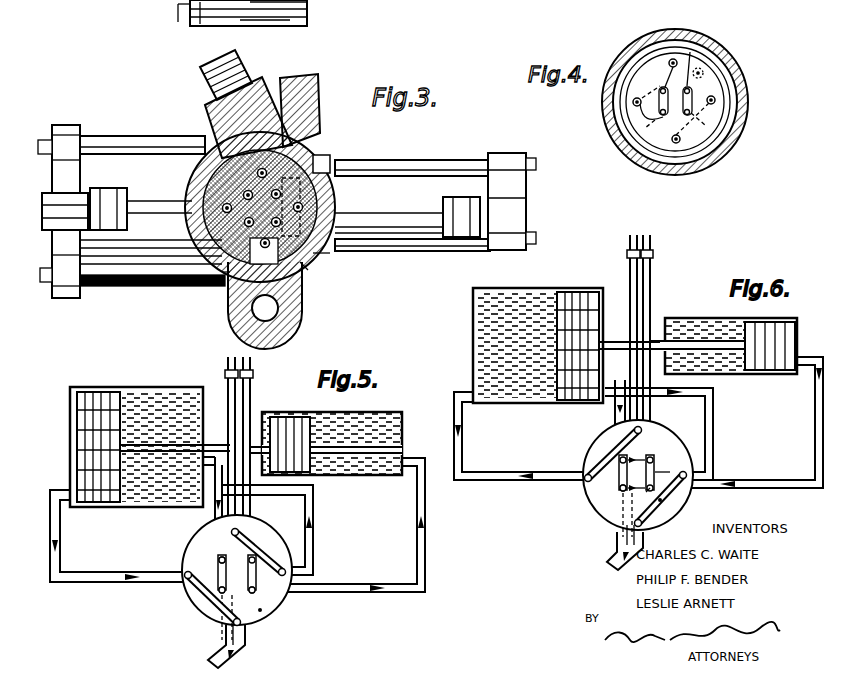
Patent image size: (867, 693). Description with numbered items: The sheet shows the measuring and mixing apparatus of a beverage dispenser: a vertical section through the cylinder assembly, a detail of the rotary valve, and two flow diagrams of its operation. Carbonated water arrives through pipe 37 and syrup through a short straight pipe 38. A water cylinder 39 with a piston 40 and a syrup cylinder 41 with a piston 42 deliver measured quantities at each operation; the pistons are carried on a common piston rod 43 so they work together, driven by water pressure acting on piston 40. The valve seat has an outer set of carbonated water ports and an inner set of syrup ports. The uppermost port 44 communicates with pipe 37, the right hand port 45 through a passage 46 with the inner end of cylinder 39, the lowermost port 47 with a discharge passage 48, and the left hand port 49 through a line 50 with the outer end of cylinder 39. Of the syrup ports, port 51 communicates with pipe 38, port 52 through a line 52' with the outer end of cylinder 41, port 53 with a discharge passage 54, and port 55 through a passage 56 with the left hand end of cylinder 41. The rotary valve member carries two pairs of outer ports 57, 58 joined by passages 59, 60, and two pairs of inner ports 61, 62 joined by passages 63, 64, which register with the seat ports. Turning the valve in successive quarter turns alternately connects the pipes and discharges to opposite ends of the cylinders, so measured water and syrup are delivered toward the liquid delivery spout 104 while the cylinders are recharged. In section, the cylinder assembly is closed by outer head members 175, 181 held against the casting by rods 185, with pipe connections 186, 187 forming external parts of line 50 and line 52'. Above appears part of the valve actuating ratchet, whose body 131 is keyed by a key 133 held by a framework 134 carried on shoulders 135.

In FIG. 3, the pipe 37 is at (210, 62).
In FIG. 6, the pipe 37 is at (627, 253).
In FIG. 5, the pipe 37 is at (225, 374).
In FIG. 3, the short straight pipe 38 is at (310, 78).
In FIG. 6, the short straight pipe 38 is at (654, 253).
In FIG. 5, the short straight pipe 38 is at (253, 378).
In FIG. 3, the water cylinder 39 is at (151, 214).
In FIG. 6, the water cylinder 39 is at (522, 289).
In FIG. 5, the water cylinder 39 is at (155, 387).
In FIG. 3, the piston 40 is at (407, 209).
In FIG. 6, the piston 40 is at (573, 292).
In FIG. 5, the piston 40 is at (110, 392).
In FIG. 6, the syrup cylinder 41 is at (684, 318).
In FIG. 5, the syrup cylinder 41 is at (372, 413).
In FIG. 6, the piston 42 is at (779, 321).
In FIG. 5, the piston 42 is at (306, 417).
In FIG. 6, the common piston rod 43 is at (616, 342).
In FIG. 5, the common piston rod 43 is at (213, 444).
In FIG. 3, the uppermost carbonated water port 44 is at (272, 165).
In FIG. 6, the uppermost carbonated water port 44 is at (610, 434).
In FIG. 5, the uppermost carbonated water port 44 is at (241, 531).
In FIG. 3, the right hand port 45 is at (305, 208).
In FIG. 6, the right hand port 45 is at (688, 466).
In FIG. 5, the right hand port 45 is at (287, 570).
In FIG. 6, the passage 46 is at (713, 402).
In FIG. 5, the passage 46 is at (315, 505).
In FIG. 3, the lowermost port 47 is at (304, 268).
In FIG. 6, the lowermost port 47 is at (663, 518).
In FIG. 5, the lowermost port 47 is at (262, 614).
In FIG. 6, the discharge passage 48 is at (645, 526).
In FIG. 5, the discharge passage 48 is at (242, 628).
In FIG. 3, the left hand port 49 is at (220, 221).
In FIG. 6, the left hand port 49 is at (584, 483).
In FIG. 5, the left hand port 49 is at (186, 579).
In FIG. 6, the line 50 is at (520, 480).
In FIG. 5, the line 50 is at (117, 536).
In FIG. 3, the syrup port 51 is at (290, 175).
In FIG. 6, the syrup port 51 is at (652, 458).
In FIG. 5, the syrup port 51 is at (258, 562).
In FIG. 3, the syrup port 52 is at (336, 267).
In FIG. 6, the syrup port 52 is at (666, 464).
In FIG. 5, the syrup port 52 is at (282, 606).
In FIG. 6, the line 52' is at (753, 422).
In FIG. 5, the line 52' is at (354, 525).
In FIG. 3, the syrup port 53 is at (206, 292).
In FIG. 6, the syrup port 53 is at (646, 492).
In FIG. 5, the syrup port 53 is at (224, 593).
In FIG. 6, the discharge passage 54 is at (622, 541).
In FIG. 5, the discharge passage 54 is at (222, 641).
In FIG. 3, the syrup port 55 is at (226, 204).
In FIG. 6, the syrup port 55 is at (618, 490).
In FIG. 5, the syrup port 55 is at (218, 560).
In FIG. 6, the passage 56 is at (616, 413).
In FIG. 5, the passage 56 is at (213, 516).
In FIG. 4, the port 57 is at (674, 58).
In FIG. 4, the outer ports 58 is at (716, 100).
In FIG. 4, the passage 59 is at (660, 75).
In FIG. 4, the passage 60 is at (735, 130).
In FIG. 4, the inner ports 61 is at (614, 123).
In FIG. 4, the inner ports 62 is at (692, 52).
In FIG. 4, the passage 63 is at (629, 130).
In FIG. 4, the passage 64 is at (722, 88).
In FIG. 3, the liquid delivery spout 104 is at (302, 309).
In FIG. 6, the liquid delivery spout 104 is at (608, 556).
In FIG. 5, the liquid delivery spout 104 is at (207, 658).
In FIG. 3, the body 131 is at (222, 24).
In FIG. 3, the key 133 is at (305, 4).
In FIG. 3, the framework 134 is at (190, 10).
In FIG. 3, the shoulders 135 is at (265, 26).
In FIG. 3, the outer head member 175 is at (52, 126).
In FIG. 3, the outer head member 181 is at (508, 183).
In FIG. 3, the rods 185 is at (115, 146).
In FIG. 3, the pipe connection 186 is at (156, 212).
In FIG. 3, the pipe connection 187 is at (393, 229).